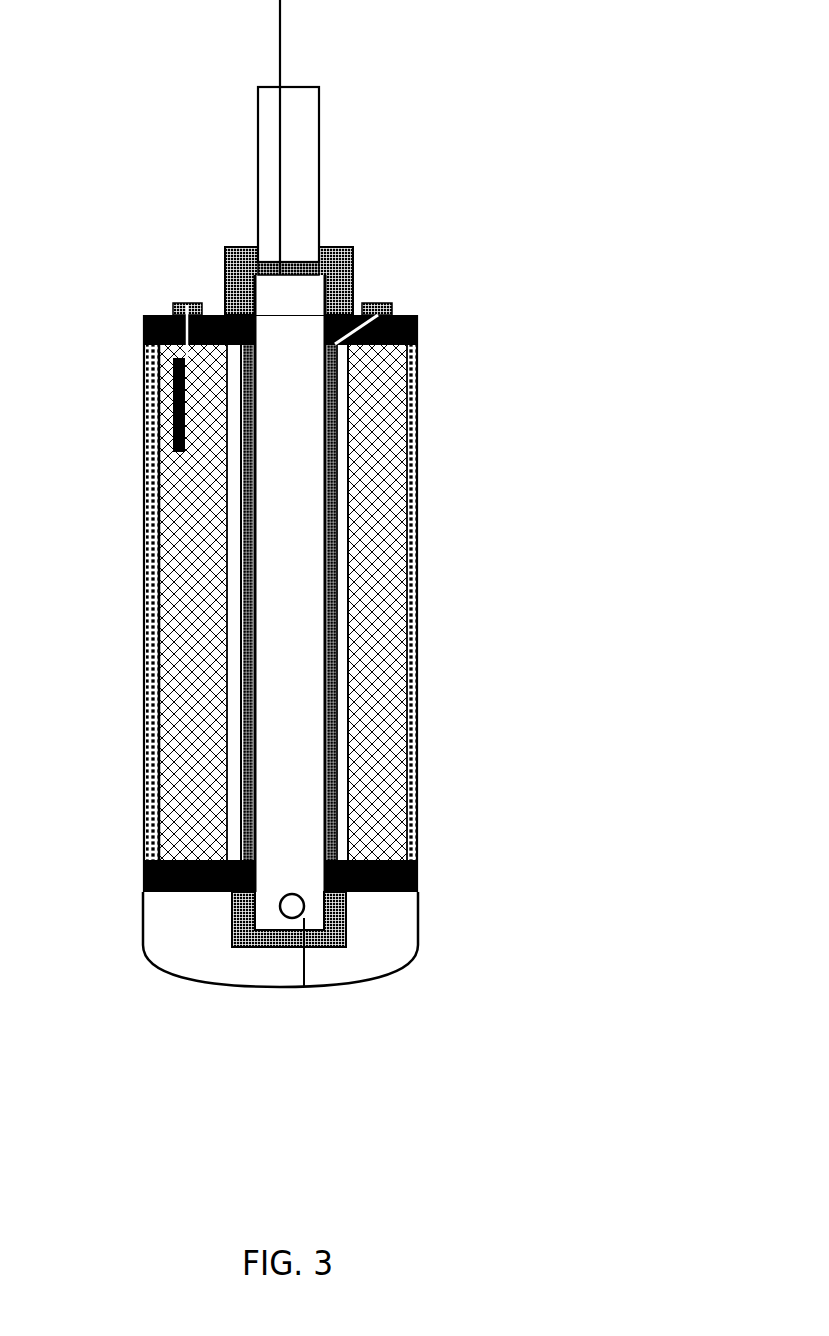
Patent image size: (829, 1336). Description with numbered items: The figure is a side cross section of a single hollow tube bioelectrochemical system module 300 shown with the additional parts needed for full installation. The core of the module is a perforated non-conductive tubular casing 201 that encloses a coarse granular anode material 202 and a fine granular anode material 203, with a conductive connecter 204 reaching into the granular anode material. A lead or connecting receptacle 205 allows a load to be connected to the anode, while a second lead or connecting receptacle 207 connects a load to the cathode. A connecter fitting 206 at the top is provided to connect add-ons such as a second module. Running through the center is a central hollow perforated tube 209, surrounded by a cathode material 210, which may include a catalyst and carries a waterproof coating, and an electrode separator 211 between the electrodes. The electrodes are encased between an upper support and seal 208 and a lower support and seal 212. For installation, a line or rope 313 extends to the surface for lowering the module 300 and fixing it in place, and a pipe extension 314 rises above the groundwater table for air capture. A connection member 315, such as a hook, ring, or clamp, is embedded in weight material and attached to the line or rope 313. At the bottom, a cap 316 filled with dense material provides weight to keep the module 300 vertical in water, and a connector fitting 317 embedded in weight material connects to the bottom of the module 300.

The single hollow tube bioelectrochemical system module 300 is at (597, 67).
The line or rope 313 is at (280, 53).
The pipe extension 314 is at (319, 165).
The connecter fitting 206 is at (228, 247).
The lead or connecting receptacle for connecting a load to the anode 205 is at (177, 303).
The lead or connecting receptacle for connecting a load to the cathode 207 is at (387, 303).
The support and seal 208 is at (418, 330).
The conductive connecter to the granular anode material 204 is at (180, 384).
The perforated non-conductive tubular casing 201 is at (143, 413).
The course granular anode material 202 is at (158, 523).
The fine granular anode material 203 is at (177, 608).
The central hollow perforated tube 209 is at (305, 450).
The cathode material 210 is at (337, 493).
The electrode separator 211 is at (347, 548).
The support and seal 212 is at (418, 872).
The connection member 315 is at (298, 893).
The cap 316 is at (418, 940).
The connector fitting 317 is at (232, 937).